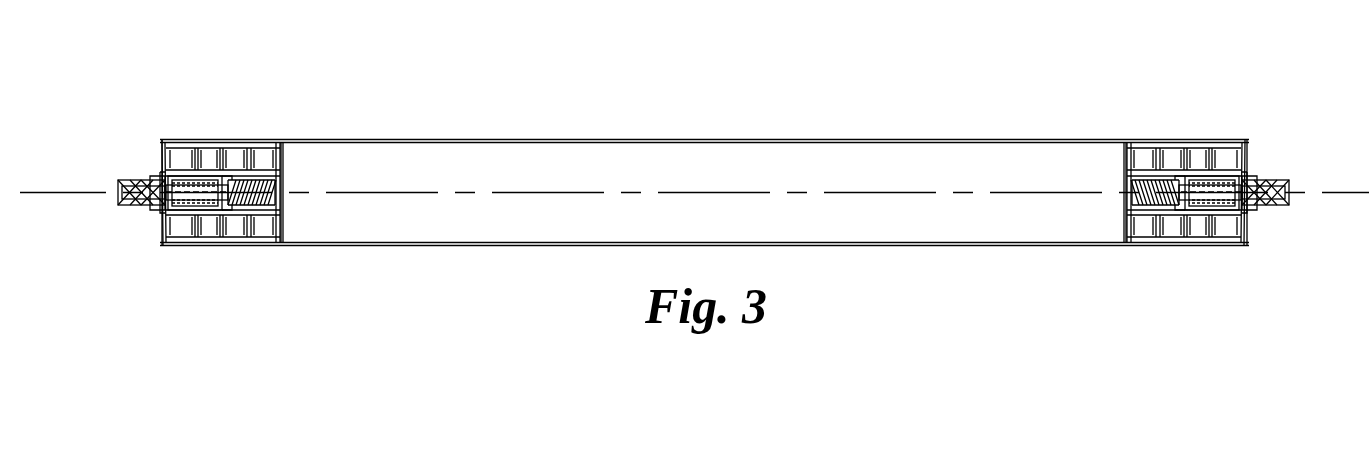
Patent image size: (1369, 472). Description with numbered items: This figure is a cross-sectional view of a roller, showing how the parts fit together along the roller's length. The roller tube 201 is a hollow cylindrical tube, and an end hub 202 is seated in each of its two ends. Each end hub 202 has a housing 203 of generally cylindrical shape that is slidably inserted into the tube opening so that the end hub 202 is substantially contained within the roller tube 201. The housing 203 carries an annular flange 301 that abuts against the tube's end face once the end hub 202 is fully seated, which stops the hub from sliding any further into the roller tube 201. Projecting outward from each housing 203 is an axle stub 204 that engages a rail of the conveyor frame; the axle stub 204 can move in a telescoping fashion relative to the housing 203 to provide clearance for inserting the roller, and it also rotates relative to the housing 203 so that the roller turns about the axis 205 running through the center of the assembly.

The roller tube 201 is at (414, 139).
The end hub 202 is at (181, 228).
The housing 203 is at (181, 140).
The axle stub 204 is at (130, 207).
The axis 205 is at (1343, 191).
The annular flange 301 is at (161, 140).